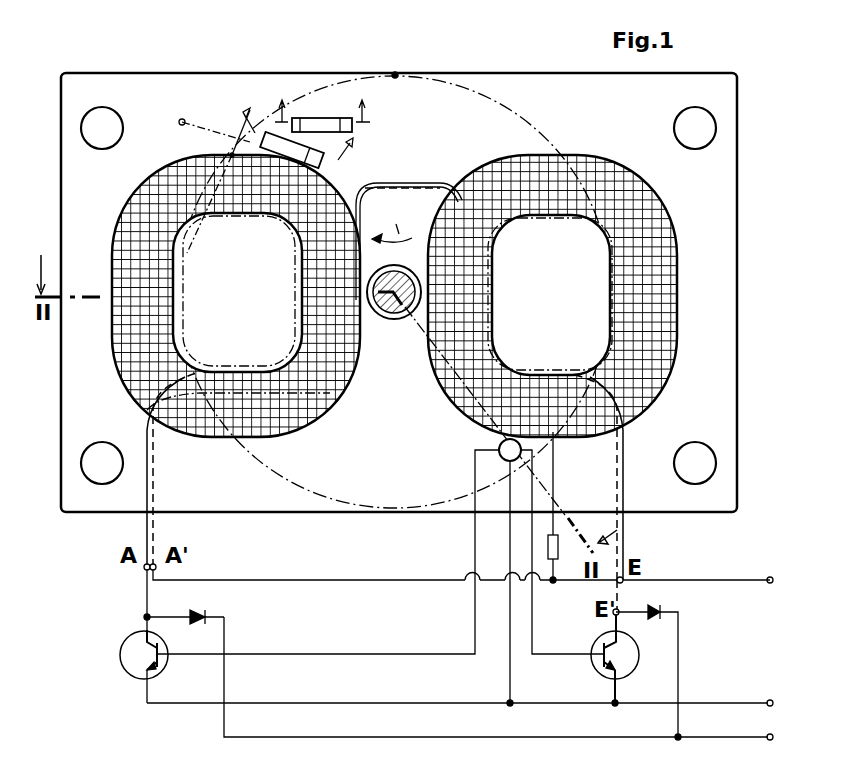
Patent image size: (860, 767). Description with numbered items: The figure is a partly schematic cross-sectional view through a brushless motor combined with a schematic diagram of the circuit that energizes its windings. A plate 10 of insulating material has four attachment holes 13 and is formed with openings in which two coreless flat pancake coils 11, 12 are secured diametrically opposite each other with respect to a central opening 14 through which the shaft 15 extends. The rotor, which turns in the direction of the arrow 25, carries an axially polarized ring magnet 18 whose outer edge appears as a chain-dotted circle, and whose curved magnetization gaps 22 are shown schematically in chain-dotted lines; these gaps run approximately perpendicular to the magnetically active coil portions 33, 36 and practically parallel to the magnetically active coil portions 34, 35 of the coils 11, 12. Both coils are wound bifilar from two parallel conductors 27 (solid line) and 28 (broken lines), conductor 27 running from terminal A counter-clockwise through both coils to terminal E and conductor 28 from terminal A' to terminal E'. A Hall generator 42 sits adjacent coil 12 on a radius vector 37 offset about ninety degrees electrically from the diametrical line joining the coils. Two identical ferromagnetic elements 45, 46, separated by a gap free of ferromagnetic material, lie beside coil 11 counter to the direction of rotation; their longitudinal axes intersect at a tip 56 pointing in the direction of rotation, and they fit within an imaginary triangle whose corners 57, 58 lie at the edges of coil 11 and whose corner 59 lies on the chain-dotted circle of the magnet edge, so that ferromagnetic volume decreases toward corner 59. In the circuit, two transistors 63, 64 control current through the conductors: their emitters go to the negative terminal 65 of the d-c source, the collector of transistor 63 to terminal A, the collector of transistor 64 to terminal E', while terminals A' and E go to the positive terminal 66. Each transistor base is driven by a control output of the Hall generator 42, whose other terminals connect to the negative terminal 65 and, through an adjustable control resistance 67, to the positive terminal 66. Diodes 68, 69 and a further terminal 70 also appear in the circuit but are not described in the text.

The plate 10 is at (575, 92).
The coreless flat coil 11 is at (125, 352).
The coreless flat coil 12 is at (668, 378).
The attachment holes 13 is at (101, 120).
The central opening 14 is at (405, 310).
The shaft 15 is at (391, 305).
The ring magnet 18 is at (297, 493).
The pole gaps 22 is at (322, 127).
The arrow 25 is at (400, 222).
The conductor 27 is at (147, 445).
The conductor 28 is at (156, 482).
The magnetically active coil portion 33 is at (248, 192).
The magnetically active coil portion 34 is at (247, 372).
The magnetically active coil portion 35 is at (555, 193).
The magnetically active coil portion 36 is at (575, 376).
The radius vector 37 is at (557, 484).
The Hall generator 42 is at (500, 444).
The ferromagnetic element 45 is at (335, 150).
The ferromagnetic element 46 is at (325, 118).
The tip of the intersecting angle 56 is at (182, 119).
The corner 57 is at (232, 155).
The corner 58 is at (409, 241).
The corner 59 is at (395, 75).
The transistor 63 is at (122, 665).
The transistor 64 is at (593, 651).
The negative terminal 65 is at (767, 702).
The positive terminal 66 is at (769, 584).
The adjustable control resistance 67 is at (548, 540).
The diode 68 is at (196, 614).
The diode 69 is at (656, 614).
The terminal 70 is at (767, 740).